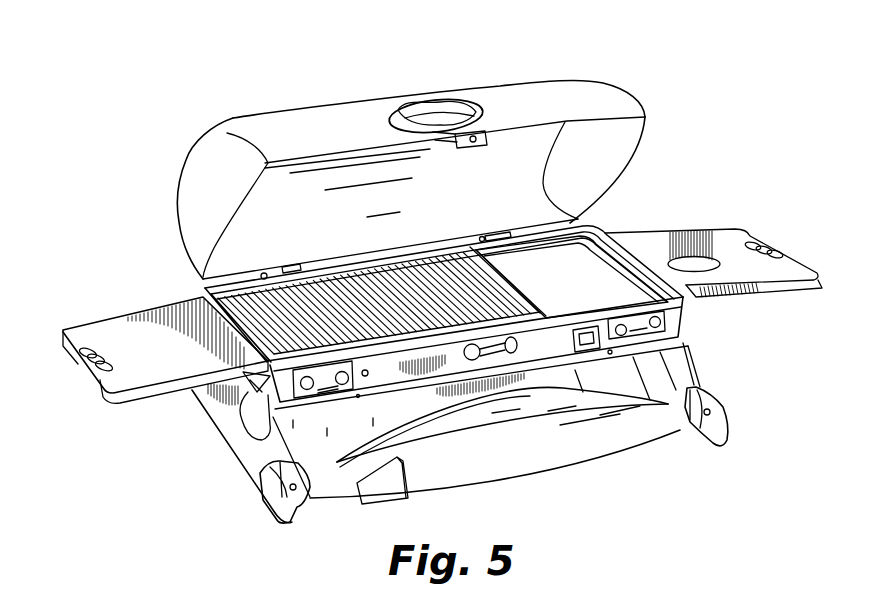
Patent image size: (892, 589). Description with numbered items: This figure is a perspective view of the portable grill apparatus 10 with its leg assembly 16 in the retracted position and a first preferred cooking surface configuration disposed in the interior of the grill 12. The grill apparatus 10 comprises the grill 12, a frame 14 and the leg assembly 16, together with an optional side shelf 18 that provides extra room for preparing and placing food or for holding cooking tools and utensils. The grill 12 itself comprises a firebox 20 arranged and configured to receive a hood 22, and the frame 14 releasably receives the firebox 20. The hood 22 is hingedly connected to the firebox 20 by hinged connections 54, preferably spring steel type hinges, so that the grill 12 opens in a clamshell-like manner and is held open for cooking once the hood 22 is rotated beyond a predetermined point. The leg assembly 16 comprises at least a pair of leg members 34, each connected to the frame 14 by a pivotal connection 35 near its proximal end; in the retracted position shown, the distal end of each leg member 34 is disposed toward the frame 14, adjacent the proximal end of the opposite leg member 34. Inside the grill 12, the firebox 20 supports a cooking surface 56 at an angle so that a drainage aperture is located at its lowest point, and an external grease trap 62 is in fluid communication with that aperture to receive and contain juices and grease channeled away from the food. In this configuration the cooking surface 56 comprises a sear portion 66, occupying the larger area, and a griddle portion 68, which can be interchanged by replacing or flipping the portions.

The portable grill apparatus 10 is at (158, 63).
The grill 12 is at (159, 193).
The frame 14 is at (683, 369).
The leg assembly 16 is at (567, 498).
The side shelf 18 is at (137, 331).
The firebox 20 is at (572, 378).
The hood 22 is at (300, 113).
The leg member 34 is at (477, 474).
The pivotal connection 35 is at (295, 491).
The hinged connection 54 is at (497, 231).
The cooking surface 56 is at (692, 311).
The external grease trap 62 is at (253, 418).
The sear portion 66 is at (296, 266).
The griddle portion 68 is at (608, 266).